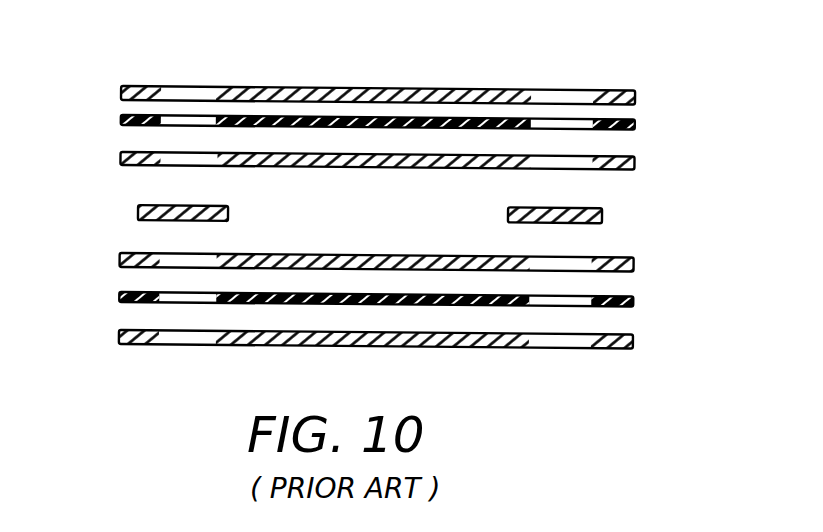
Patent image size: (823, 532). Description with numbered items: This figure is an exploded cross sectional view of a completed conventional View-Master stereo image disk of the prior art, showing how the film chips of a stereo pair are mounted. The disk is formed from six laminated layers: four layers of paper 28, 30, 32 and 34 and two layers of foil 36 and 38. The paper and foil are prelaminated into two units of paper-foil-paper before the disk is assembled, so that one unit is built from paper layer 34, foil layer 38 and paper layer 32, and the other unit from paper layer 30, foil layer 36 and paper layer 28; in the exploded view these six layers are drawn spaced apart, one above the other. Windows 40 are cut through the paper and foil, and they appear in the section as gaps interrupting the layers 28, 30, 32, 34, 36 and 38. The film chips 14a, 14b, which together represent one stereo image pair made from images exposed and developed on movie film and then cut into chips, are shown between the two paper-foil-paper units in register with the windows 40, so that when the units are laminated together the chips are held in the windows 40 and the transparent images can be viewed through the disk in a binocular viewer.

The film chip 14a is at (138, 210).
The film chip 14b is at (603, 215).
The paper layer 28 is at (636, 341).
The paper layer 30 is at (636, 263).
The paper layer 32 is at (636, 160).
The paper layer 34 is at (636, 92).
The foil layer 36 is at (636, 302).
The foil layer 38 is at (636, 121).
The windows 40 is at (162, 90).